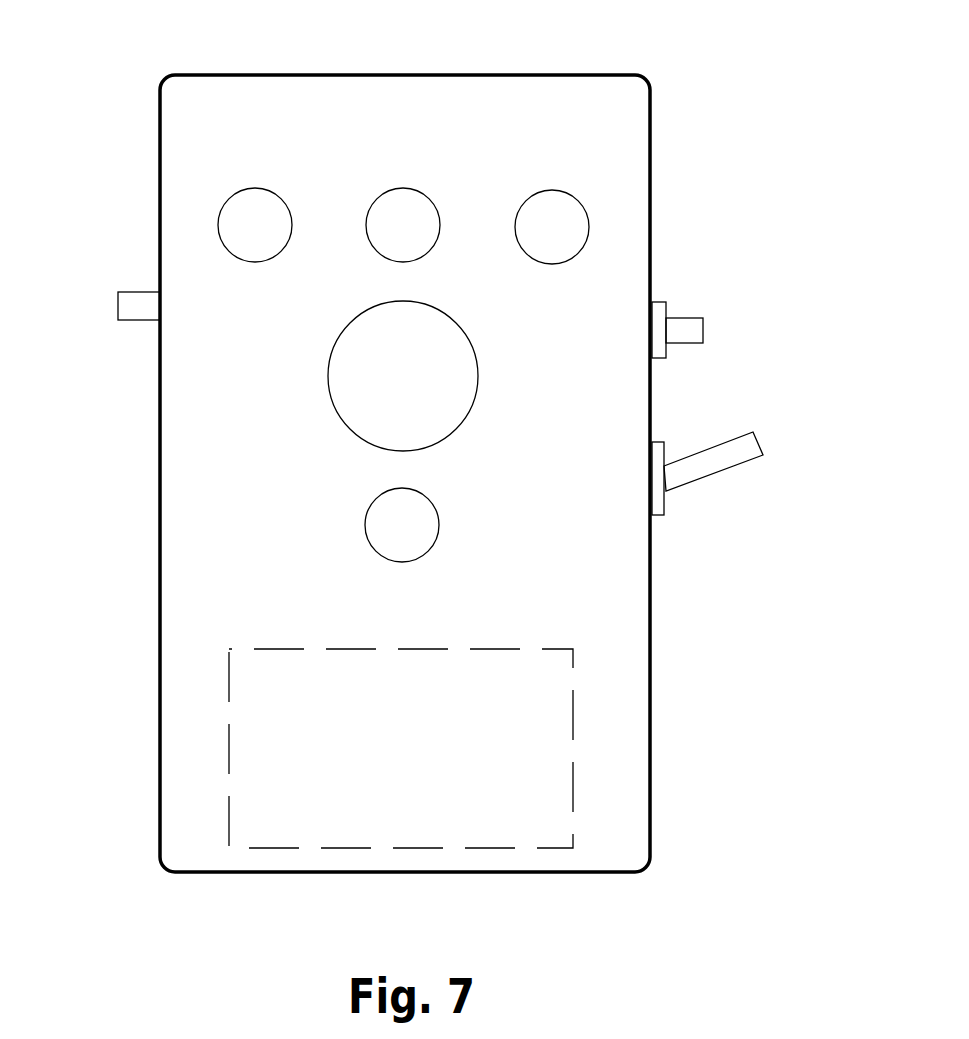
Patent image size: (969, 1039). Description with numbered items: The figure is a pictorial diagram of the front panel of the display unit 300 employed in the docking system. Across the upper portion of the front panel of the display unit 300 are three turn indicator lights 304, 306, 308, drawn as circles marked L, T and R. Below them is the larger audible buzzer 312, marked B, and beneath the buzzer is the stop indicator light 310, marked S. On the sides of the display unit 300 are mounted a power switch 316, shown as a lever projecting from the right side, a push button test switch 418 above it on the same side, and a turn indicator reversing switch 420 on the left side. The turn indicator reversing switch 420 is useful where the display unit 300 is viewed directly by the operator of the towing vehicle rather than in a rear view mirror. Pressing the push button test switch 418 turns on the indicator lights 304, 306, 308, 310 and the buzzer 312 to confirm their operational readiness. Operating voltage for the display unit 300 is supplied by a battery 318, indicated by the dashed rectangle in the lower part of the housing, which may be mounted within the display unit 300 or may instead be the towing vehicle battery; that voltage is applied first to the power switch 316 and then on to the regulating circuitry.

The display unit 300 is at (658, 608).
The turn indicator light 304 is at (568, 185).
The turn indicator light 306 is at (421, 182).
The turn indicator light 308 is at (272, 180).
The stop indicator light 310 is at (433, 498).
The audible buzzer 312 is at (463, 325).
The power switch 316 is at (767, 437).
The battery 318 is at (377, 858).
The push button test switch 418 is at (710, 323).
The turn indicator reversing switch 420 is at (110, 303).